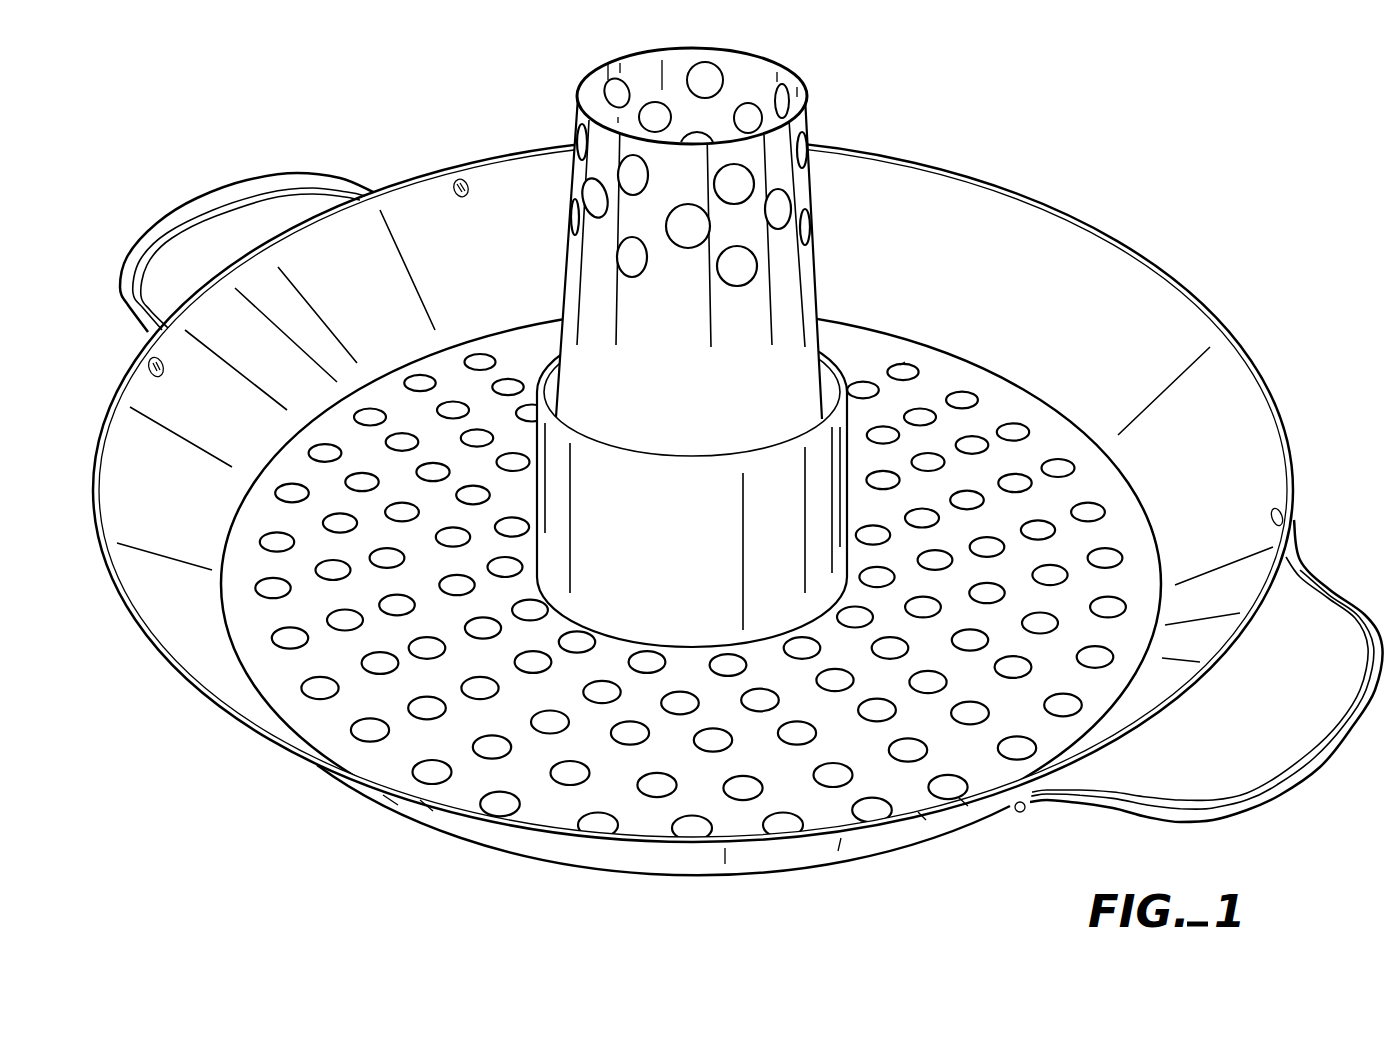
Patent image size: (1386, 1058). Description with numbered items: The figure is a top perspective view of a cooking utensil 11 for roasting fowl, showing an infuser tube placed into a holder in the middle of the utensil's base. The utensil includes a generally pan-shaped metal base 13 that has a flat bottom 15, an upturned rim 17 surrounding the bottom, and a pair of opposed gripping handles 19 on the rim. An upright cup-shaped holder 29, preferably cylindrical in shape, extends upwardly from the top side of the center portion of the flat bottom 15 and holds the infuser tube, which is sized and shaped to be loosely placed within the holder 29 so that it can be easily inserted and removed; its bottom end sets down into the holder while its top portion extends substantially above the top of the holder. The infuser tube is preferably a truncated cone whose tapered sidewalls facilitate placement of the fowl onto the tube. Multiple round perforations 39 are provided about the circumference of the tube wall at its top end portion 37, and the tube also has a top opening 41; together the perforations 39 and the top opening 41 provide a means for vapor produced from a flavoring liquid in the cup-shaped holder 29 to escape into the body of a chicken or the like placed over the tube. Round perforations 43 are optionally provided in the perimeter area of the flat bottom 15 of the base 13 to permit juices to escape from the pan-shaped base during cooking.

The cooking utensil 11 is at (202, 755).
The pan-shaped metal base 13 is at (437, 363).
The flat bottom 15 is at (957, 377).
The upturned rim 17 is at (543, 160).
The gripping handles 19 is at (156, 233).
The cup-shaped holder 29 is at (836, 470).
The top end portion 37 is at (806, 292).
The round perforations 39 is at (778, 213).
The top opening 41 is at (750, 78).
The round perforations 43 is at (1010, 430).